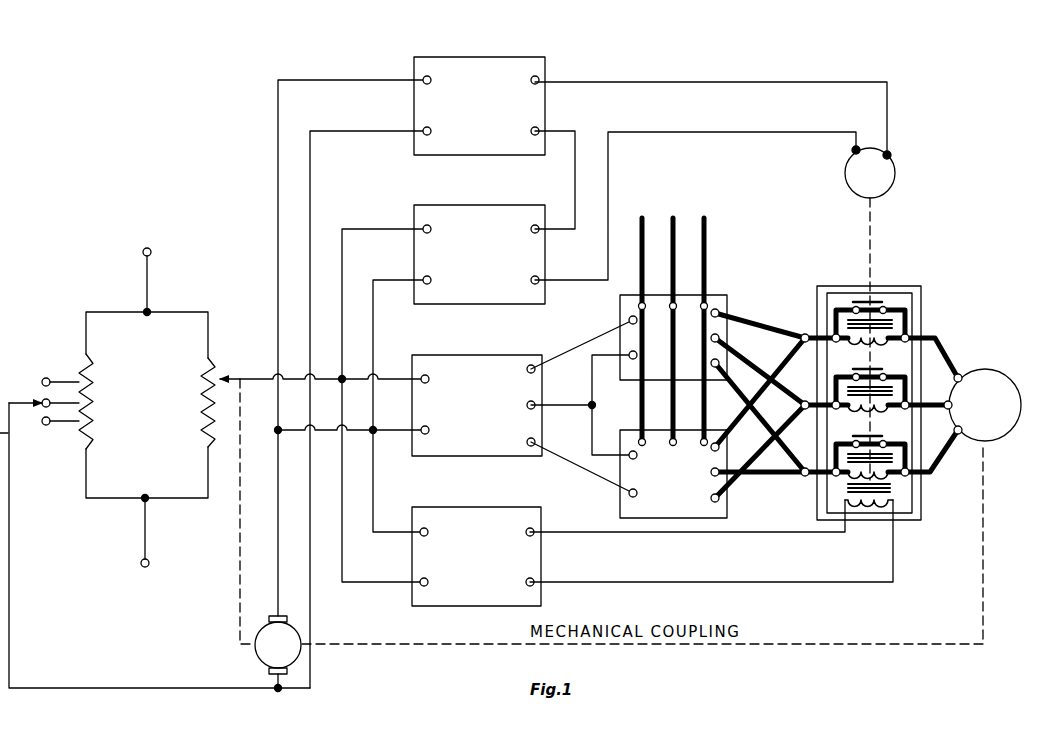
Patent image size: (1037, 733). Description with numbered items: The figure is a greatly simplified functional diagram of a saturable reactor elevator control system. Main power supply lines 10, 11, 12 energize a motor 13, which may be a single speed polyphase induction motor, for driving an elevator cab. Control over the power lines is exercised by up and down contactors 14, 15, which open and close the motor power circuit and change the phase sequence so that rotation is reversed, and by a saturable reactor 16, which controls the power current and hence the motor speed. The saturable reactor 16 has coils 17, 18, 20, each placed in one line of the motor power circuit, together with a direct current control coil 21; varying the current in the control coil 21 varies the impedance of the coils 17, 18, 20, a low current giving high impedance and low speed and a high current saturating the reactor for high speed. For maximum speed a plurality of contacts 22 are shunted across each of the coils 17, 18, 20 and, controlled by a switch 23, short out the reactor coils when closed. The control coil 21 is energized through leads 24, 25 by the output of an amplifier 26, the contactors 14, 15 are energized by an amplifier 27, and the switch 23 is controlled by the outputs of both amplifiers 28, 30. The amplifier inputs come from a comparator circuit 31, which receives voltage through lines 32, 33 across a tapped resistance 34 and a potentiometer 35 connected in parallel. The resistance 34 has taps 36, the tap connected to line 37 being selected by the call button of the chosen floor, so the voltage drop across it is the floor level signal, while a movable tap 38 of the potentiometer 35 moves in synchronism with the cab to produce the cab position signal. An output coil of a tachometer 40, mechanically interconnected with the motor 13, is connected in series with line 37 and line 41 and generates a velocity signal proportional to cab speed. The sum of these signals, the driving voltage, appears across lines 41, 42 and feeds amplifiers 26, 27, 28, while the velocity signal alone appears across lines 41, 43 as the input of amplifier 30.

The main power supply line 10 is at (646, 222).
The main power supply line 11 is at (677, 222).
The main power supply line 12 is at (708, 222).
The motor 13 is at (990, 380).
The up contactor 14 is at (728, 303).
The down contactor 15 is at (728, 508).
The saturable reactor 16 is at (922, 288).
The coil 17 is at (884, 344).
The coil 18 is at (884, 411).
The coil 20 is at (884, 478).
The direct current control coil 21 is at (880, 506).
The contacts 22 is at (880, 300).
The switch 23 is at (893, 168).
The lead 24 is at (712, 532).
The lead 25 is at (800, 583).
The amplifier 26 is at (465, 506).
The amplifier 27 is at (468, 354).
The amplifier 28 is at (472, 204).
The amplifier 30 is at (470, 56).
The comparator circuit 31 is at (210, 310).
The line 32 is at (150, 266).
The line 33 is at (147, 545).
The tapped resistance 34 is at (78, 360).
The potentiometer 35 is at (204, 420).
The taps 36 is at (45, 381).
The line 37 is at (142, 686).
The movable tap 38 is at (226, 374).
The tachometer 40 is at (254, 650).
The line 41 is at (365, 78).
The line 42 is at (392, 376).
The line 43 is at (311, 190).